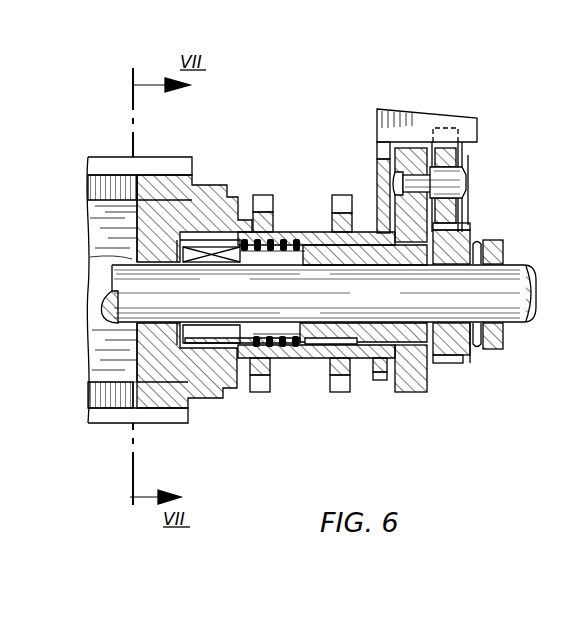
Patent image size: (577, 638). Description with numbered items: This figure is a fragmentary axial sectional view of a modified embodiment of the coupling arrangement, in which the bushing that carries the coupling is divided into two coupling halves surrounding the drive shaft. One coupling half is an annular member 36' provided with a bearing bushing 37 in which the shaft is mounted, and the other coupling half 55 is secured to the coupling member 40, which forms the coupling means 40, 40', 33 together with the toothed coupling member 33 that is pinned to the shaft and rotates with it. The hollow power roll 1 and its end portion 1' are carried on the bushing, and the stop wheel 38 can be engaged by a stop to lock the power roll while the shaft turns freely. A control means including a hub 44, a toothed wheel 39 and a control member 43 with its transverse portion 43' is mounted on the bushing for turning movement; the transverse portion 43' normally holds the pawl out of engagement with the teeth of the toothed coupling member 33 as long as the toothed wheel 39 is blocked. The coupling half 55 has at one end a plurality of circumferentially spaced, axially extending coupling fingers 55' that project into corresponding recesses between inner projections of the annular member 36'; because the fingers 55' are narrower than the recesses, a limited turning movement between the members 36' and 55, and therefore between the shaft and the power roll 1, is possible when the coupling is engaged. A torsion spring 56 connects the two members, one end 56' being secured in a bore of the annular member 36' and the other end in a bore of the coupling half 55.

The power roll 1 is at (96, 293).
The housing cover 1' is at (138, 309).
The toothed coupling member 33 is at (468, 227).
The annular member 36' is at (187, 382).
The bearing bushing 37 is at (120, 330).
The stop wheel 38 is at (262, 392).
The toothed wheel 39 is at (342, 392).
The coupling member 40 is at (413, 291).
The coupling means 40' is at (458, 187).
The control member 43 is at (383, 396).
The transverse portion of control member 43' is at (430, 114).
The hub 44 is at (362, 228).
The coupling half 55 is at (479, 313).
The coupling fingers 55' is at (88, 252).
The torsion spring 56 is at (272, 325).
The end of torsion spring 56' is at (363, 341).